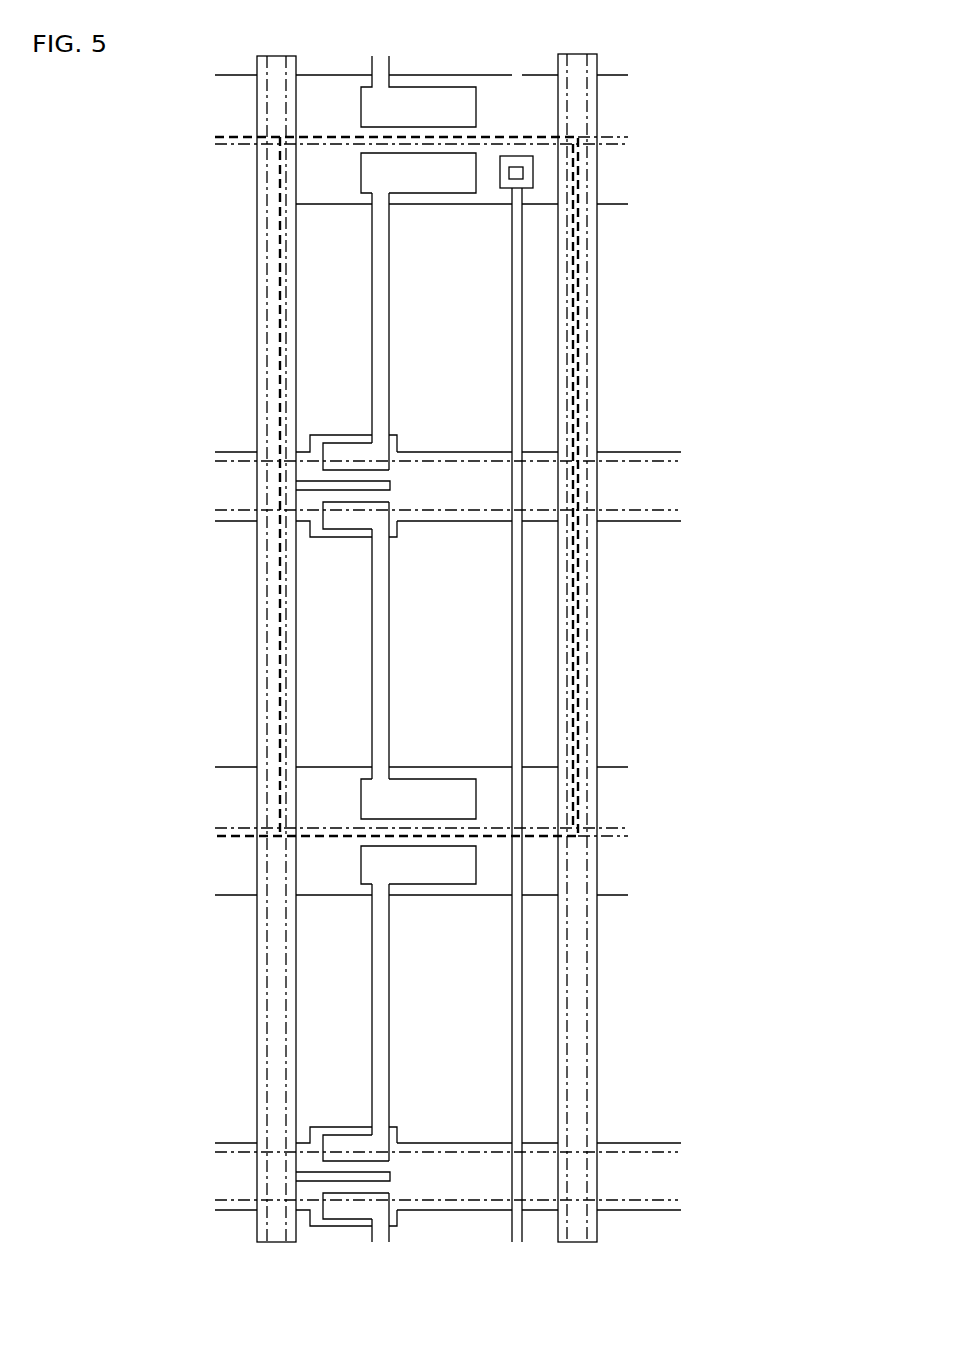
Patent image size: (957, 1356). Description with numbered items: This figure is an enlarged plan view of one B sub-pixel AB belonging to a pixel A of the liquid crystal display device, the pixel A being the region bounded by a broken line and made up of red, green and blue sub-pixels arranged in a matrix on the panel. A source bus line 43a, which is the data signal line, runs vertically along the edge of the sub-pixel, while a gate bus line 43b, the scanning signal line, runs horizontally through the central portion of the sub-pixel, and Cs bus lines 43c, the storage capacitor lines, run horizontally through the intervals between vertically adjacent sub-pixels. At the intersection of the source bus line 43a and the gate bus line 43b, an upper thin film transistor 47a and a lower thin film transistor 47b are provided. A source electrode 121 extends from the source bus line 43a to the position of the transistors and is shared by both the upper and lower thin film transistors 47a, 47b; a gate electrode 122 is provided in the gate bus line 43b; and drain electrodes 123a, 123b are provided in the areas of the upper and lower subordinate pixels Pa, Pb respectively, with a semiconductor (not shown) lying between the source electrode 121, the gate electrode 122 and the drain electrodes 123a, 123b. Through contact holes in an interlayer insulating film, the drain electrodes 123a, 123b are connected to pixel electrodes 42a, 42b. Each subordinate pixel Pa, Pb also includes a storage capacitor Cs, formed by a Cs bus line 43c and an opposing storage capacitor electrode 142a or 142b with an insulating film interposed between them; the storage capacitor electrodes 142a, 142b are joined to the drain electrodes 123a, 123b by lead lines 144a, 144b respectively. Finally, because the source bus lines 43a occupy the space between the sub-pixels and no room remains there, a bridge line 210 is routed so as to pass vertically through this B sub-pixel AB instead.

The source bus line 43a is at (297, 64).
The gate bus line 43b is at (216, 451).
The Cs bus line 43c is at (216, 74).
The pixel electrode 42a is at (568, 338).
The pixel electrode 42b is at (568, 657).
The pixel A is at (577, 242).
The B sub-pixel AB is at (577, 293).
The storage capacitor Cs is at (356, 193).
The upper subordinate pixel Pa is at (313, 298).
The lower subordinate pixel Pb is at (313, 644).
The storage capacitor electrode 142a is at (440, 178).
The storage capacitor electrode 142b is at (440, 105).
The lead line 144a is at (390, 316).
The lead line 144b is at (390, 660).
The drain electrode 123a is at (357, 443).
The drain electrode 123b is at (355, 530).
The source electrode 121 is at (391, 488).
The gate electrode 122 is at (398, 534).
The thin film transistor 47a is at (328, 428).
The thin film transistor 47b is at (328, 548).
The bridge line 210 is at (523, 592).